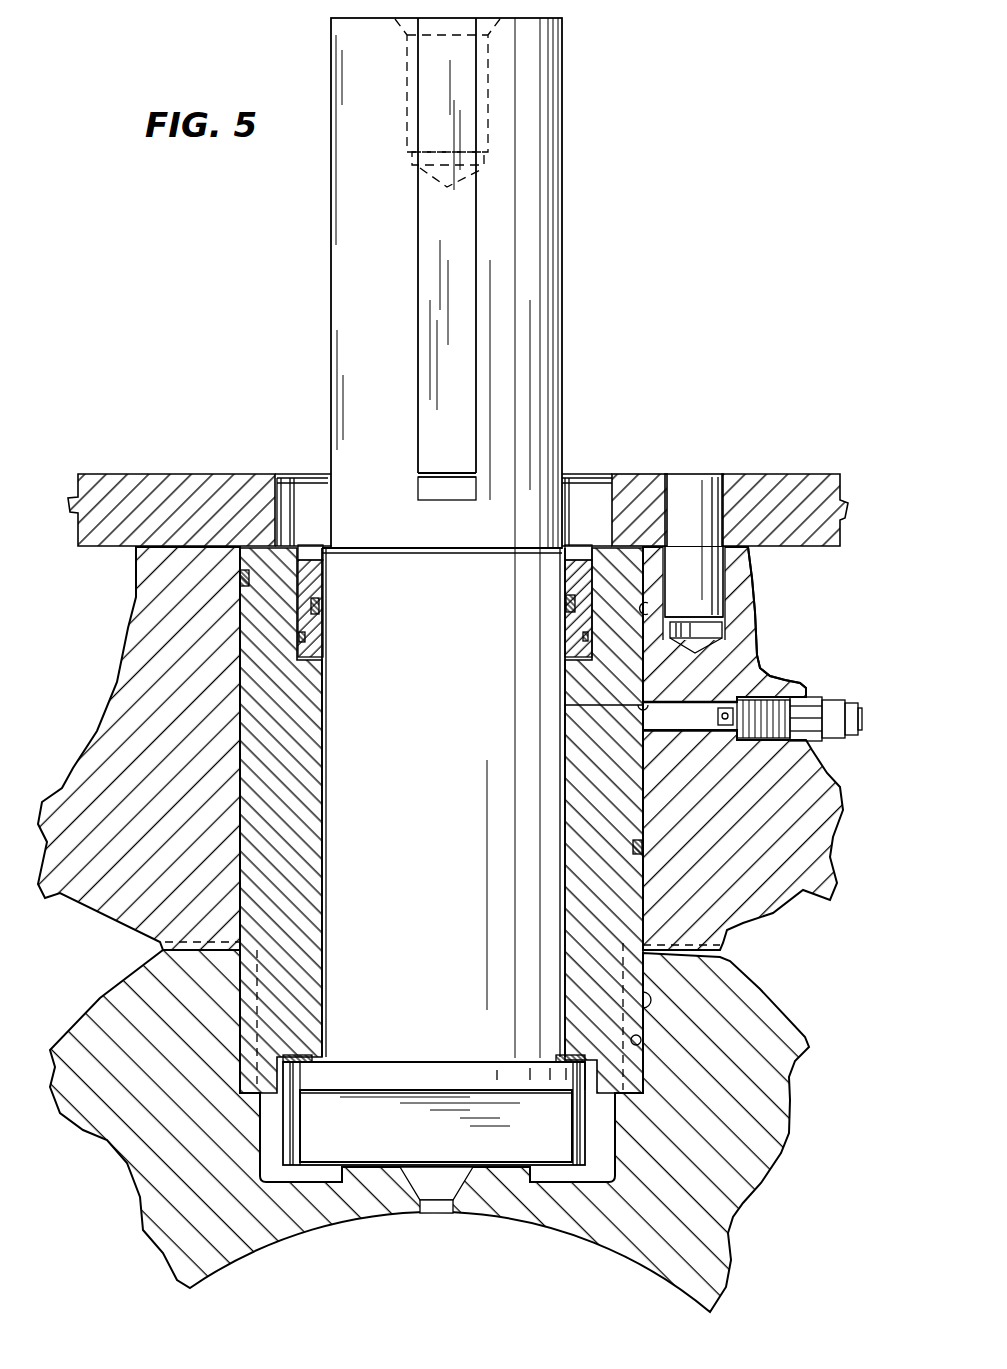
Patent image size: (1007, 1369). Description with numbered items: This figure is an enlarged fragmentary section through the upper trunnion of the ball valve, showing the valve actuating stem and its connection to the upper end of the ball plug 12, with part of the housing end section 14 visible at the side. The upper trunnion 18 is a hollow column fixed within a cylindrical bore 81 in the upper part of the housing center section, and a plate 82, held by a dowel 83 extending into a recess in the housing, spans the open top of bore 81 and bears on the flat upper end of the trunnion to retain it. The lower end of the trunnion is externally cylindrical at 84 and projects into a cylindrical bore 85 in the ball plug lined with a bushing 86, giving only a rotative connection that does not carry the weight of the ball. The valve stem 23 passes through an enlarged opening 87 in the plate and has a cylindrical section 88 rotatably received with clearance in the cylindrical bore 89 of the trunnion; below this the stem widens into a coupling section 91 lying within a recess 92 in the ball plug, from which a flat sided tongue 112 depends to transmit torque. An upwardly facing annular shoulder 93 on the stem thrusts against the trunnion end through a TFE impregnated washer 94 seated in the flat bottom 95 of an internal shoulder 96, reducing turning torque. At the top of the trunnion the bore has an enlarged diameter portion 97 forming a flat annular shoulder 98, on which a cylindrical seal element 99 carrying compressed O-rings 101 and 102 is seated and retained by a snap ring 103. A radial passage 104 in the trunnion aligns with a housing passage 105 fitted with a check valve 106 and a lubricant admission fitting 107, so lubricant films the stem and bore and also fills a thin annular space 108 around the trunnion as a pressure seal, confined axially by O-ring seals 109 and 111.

The ball plug 12 is at (772, 1000).
The annular end section 14 is at (120, 722).
The upper trunnion 18 is at (288, 731).
The valve stem 23 is at (560, 236).
The cylindrical bore 81 is at (646, 610).
The plate 82 is at (655, 485).
The dowel 83 is at (712, 564).
The externally cylindrical lower end 84 is at (646, 1000).
The cylindrical bore 85 is at (640, 1040).
The bushing 86 is at (645, 985).
The enlarged opening 87 is at (282, 493).
The cylindrical section 88 is at (427, 840).
The cylindrical bore 89 is at (322, 884).
The coupling section 91 is at (585, 1140).
The recess 92 is at (600, 1160).
The annular shoulder 93 is at (413, 1062).
The thrust washer 94 is at (540, 1068).
The flat bottom 95 is at (302, 1067).
The internal shoulder 96 is at (590, 1083).
The enlarged diameter portion 97 is at (309, 539).
The annular shoulder 98 is at (323, 652).
The seal element 99 is at (566, 586).
The O-ring 101 is at (305, 640).
The O-ring 102 is at (319, 606).
The snap ring 103 is at (592, 558).
The radial passage 104 is at (570, 710).
The housing passage 105 is at (750, 668).
The check valve 106 is at (755, 688).
The lubricant admission fitting 107 is at (830, 690).
The annular space 108 is at (648, 758).
The O-ring seal 109 is at (249, 578).
The O-ring seal 111 is at (632, 848).
The tongue 112 is at (340, 1145).